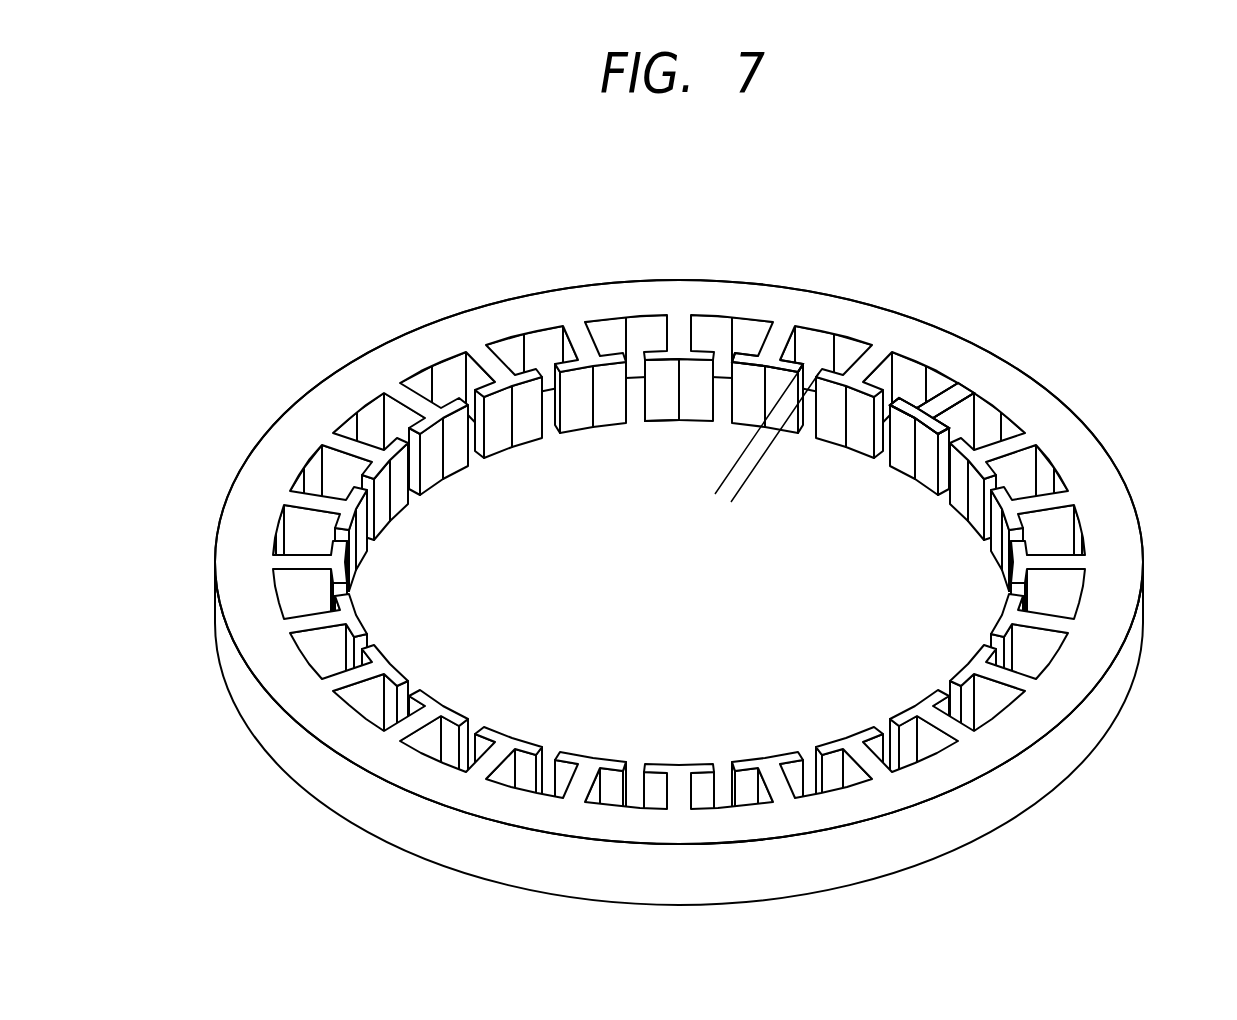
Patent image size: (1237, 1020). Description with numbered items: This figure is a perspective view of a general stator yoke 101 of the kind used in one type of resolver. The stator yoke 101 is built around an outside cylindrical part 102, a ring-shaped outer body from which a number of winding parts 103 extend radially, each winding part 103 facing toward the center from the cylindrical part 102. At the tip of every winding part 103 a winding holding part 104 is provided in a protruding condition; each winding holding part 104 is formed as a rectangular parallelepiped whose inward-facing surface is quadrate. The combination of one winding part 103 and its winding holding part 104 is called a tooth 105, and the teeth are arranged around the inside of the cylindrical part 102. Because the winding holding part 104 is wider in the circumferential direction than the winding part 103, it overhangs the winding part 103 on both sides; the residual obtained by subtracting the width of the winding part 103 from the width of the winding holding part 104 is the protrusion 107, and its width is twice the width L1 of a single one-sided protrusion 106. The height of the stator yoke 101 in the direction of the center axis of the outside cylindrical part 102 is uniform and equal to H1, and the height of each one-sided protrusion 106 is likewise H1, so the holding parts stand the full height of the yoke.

The stator yoke 101 is at (375, 285).
The outside cylindrical part 102 is at (1063, 430).
The winding part 103 is at (940, 397).
The winding holding part 104 is at (917, 400).
The tooth 105 is at (1103, 205).
The one-sided protrusion 106 is at (757, 356).
The protrusion 107 is at (900, 175).
The height of the stator yoke H1 is at (655, 363).
The width of one-sided protrusion L1 is at (670, 470).